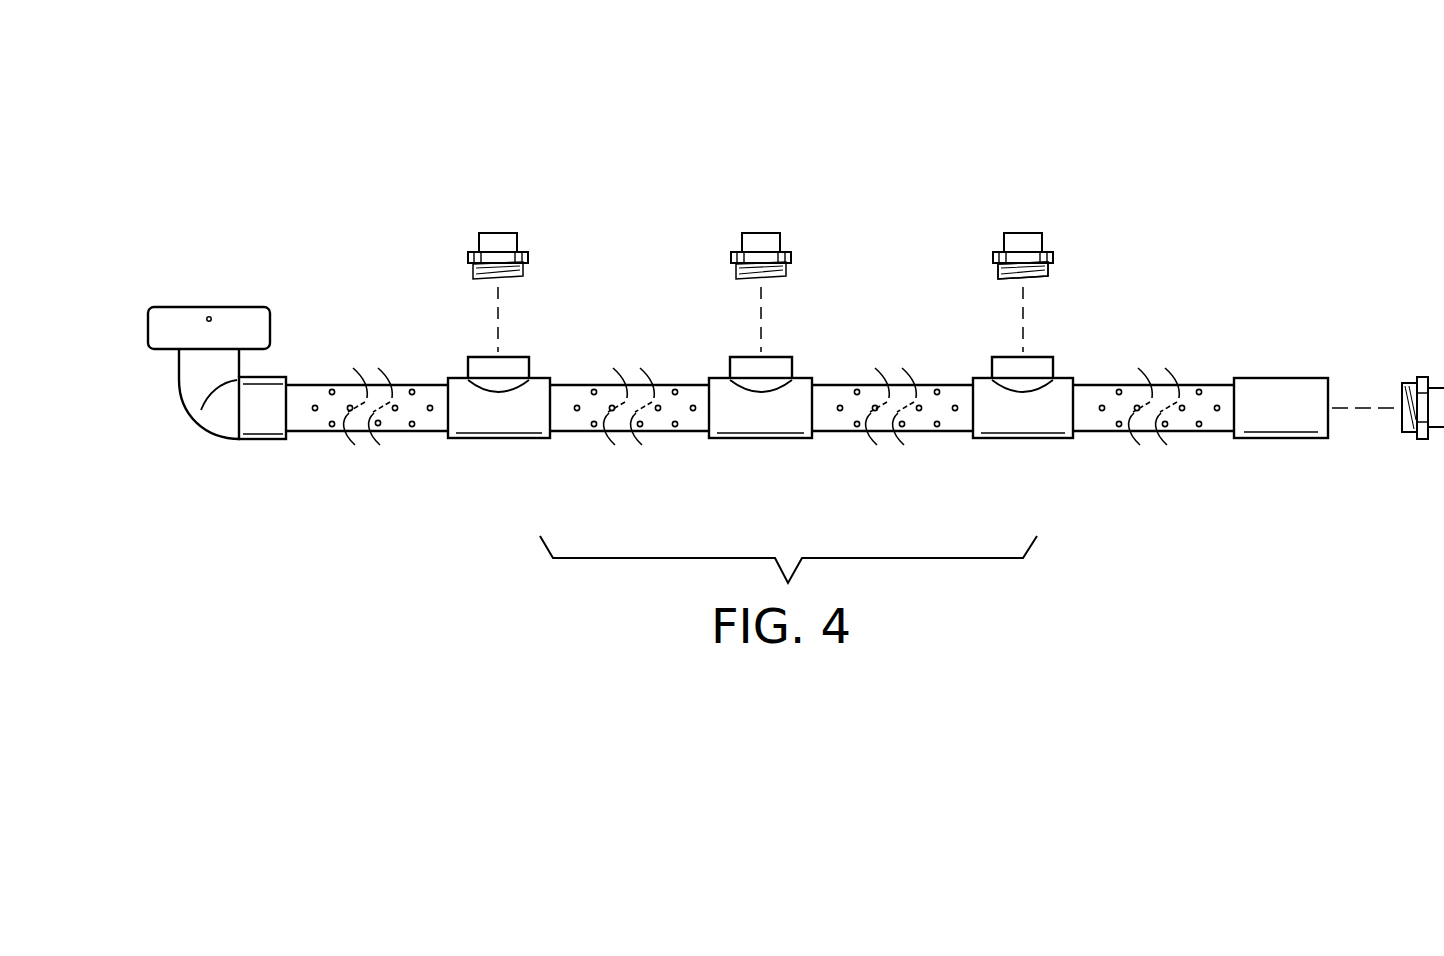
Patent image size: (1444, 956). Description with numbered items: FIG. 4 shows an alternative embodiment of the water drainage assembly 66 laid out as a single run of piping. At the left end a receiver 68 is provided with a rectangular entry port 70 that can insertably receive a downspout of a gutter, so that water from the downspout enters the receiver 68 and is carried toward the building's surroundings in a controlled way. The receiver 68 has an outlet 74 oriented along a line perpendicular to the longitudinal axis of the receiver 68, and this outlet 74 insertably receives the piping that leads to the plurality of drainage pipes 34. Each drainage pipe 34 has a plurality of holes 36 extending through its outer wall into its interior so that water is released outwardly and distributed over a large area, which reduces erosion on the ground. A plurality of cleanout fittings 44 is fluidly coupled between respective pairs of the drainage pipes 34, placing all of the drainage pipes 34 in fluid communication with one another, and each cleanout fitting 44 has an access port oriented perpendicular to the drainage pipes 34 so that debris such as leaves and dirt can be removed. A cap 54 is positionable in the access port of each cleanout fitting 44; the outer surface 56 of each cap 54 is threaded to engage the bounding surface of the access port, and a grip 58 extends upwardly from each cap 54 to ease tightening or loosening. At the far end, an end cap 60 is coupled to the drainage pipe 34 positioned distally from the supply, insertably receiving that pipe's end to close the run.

The drainage pipe 34 is at (403, 432).
The holes 36 is at (577, 408).
The cleanout fitting 44 is at (528, 438).
The cap 54 is at (468, 256).
The outer surface 56 is at (1032, 270).
The grip 58 is at (500, 234).
The end cap 60 is at (1286, 438).
The manifold assembly 66 is at (378, 165).
The receiver 68 is at (190, 413).
The rectangular entry port 70 is at (188, 285).
The outlet 74 is at (287, 405).